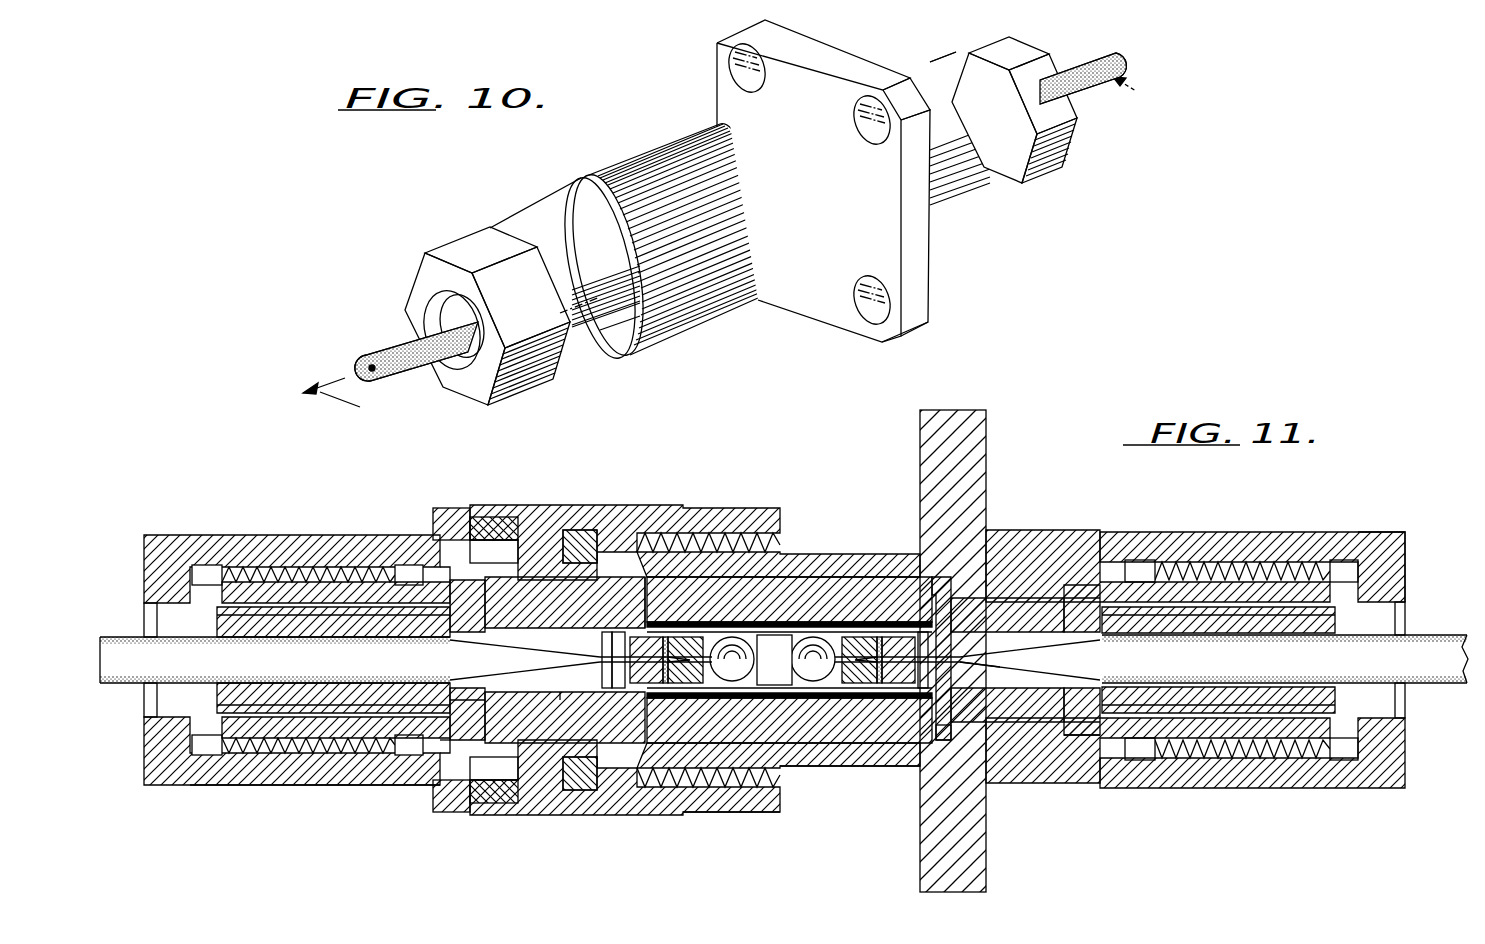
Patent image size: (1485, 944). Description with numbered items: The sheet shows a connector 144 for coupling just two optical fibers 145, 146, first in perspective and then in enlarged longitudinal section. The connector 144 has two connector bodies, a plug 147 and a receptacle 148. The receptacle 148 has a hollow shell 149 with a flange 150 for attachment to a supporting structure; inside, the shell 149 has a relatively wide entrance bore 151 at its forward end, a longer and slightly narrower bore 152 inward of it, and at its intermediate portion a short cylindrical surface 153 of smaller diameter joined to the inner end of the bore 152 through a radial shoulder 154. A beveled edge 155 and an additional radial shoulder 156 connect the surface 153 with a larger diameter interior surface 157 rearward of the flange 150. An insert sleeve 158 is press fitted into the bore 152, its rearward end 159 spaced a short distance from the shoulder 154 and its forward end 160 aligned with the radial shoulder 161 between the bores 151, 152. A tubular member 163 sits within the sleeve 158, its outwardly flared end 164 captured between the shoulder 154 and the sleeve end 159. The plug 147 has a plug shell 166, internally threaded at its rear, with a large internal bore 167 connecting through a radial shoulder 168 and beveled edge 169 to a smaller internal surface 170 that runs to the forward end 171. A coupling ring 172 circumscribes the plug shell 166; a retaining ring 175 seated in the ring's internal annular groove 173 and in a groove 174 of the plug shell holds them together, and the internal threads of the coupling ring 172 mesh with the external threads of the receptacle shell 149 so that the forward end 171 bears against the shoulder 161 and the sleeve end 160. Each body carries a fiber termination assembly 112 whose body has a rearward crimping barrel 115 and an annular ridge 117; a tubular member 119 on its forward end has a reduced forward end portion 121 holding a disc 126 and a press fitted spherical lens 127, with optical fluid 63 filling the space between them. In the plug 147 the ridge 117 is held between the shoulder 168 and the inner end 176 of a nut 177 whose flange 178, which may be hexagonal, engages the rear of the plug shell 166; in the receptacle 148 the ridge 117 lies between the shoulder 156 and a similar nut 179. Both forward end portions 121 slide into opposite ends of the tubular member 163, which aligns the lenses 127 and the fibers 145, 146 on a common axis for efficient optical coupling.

In FIG. 11, the optical fluid 63 is at (708, 637).
In FIG. 11, the fiber termination assembly 112 is at (345, 735).
In FIG. 11, the rearward crimping barrel 115 is at (308, 614).
In FIG. 11, the annular ridge 117 is at (1068, 560).
In FIG. 11, the tubular member 119 is at (985, 596).
In FIG. 11, the forward end portion 121 is at (690, 636).
In FIG. 11, the disc 126 is at (860, 632).
In FIG. 11, the spherical lens 127 is at (733, 640).
In FIG. 10, the connector 144 is at (744, 372).
In FIG. 11, the connector 144 is at (630, 862).
In FIG. 10, the optical fiber 145 is at (364, 362).
In FIG. 11, the optical fiber 145 is at (458, 657).
In FIG. 10, the optical fiber 146 is at (1124, 63).
In FIG. 11, the optical fiber 146 is at (1100, 655).
In FIG. 10, the plug 147 is at (652, 380).
In FIG. 11, the plug 147 is at (396, 815).
In FIG. 10, the receptacle 148 is at (1000, 221).
In FIG. 11, the receptacle 148 is at (1078, 820).
In FIG. 10, the receptacle shell 149 is at (940, 212).
In FIG. 11, the receptacle shell 149 is at (1182, 790).
In FIG. 10, the flange 150 is at (930, 300).
In FIG. 11, the flange 150 is at (920, 858).
In FIG. 11, the entrance bore 151 is at (610, 597).
In FIG. 11, the bore 152 is at (792, 578).
In FIG. 11, the cylindrical surface 153 is at (1000, 688).
In FIG. 11, the radial shoulder 154 is at (940, 582).
In FIG. 11, the beveled edge 155 is at (1062, 724).
In FIG. 11, the radial shoulder 156 is at (1062, 600).
In FIG. 11, the interior surface 157 is at (1068, 736).
In FIG. 11, the insert sleeve 158 is at (855, 768).
In FIG. 11, the rearward end 159 is at (946, 730).
In FIG. 11, the forward end 160 is at (645, 740).
In FIG. 11, the radial shoulder 161 is at (708, 660).
In FIG. 11, the tubular member 163 is at (800, 688).
In FIG. 11, the outwardly flared end 164 is at (940, 692).
In FIG. 10, the plug shell 166 is at (585, 352).
In FIG. 11, the plug shell 166 is at (380, 788).
In FIG. 11, the internal bore 167 is at (432, 745).
In FIG. 11, the radial shoulder 168 is at (485, 735).
In FIG. 11, the beveled edge 169 is at (488, 702).
In FIG. 11, the internal surface 170 is at (562, 700).
In FIG. 11, the forward end 171 is at (660, 690).
In FIG. 10, the coupling ring 172 is at (630, 168).
In FIG. 11, the coupling ring 172 is at (586, 505).
In FIG. 11, the internal annular groove 173 is at (495, 520).
In FIG. 11, the groove 174 is at (500, 570).
In FIG. 11, the retaining ring 175 is at (472, 512).
In FIG. 11, the inner end 176 is at (447, 580).
In FIG. 10, the nut 177 is at (462, 392).
In FIG. 11, the nut 177 is at (167, 786).
In FIG. 10, the flange 178 is at (494, 405).
In FIG. 10, the nut 179 is at (1025, 60).
In FIG. 11, the nut 179 is at (1368, 532).